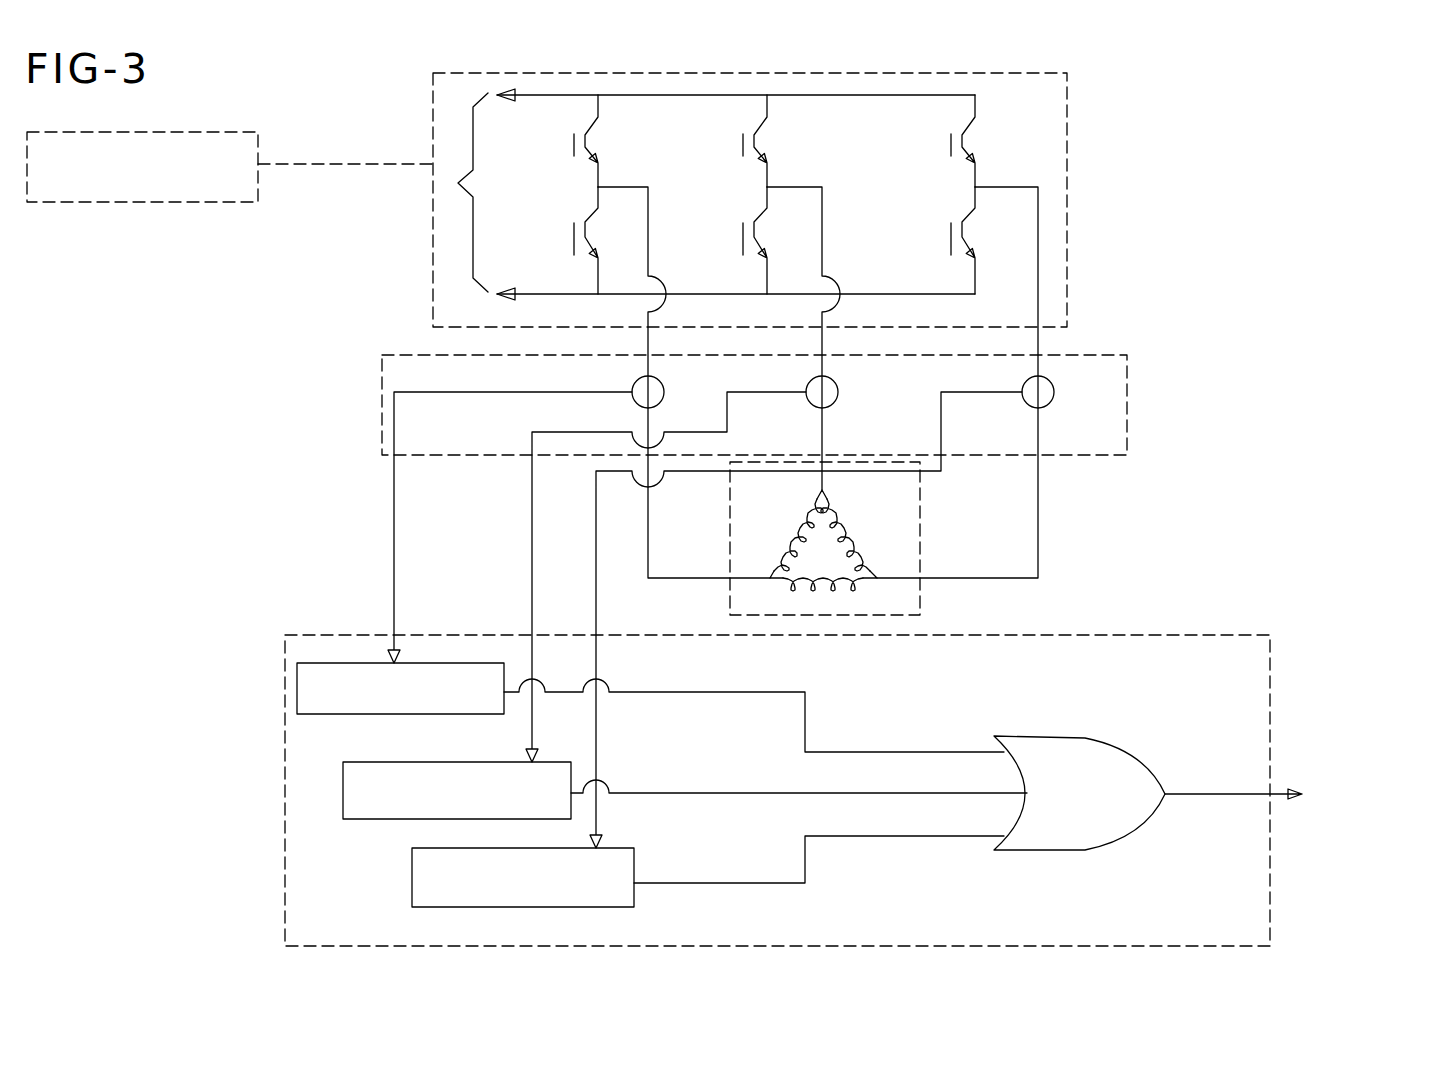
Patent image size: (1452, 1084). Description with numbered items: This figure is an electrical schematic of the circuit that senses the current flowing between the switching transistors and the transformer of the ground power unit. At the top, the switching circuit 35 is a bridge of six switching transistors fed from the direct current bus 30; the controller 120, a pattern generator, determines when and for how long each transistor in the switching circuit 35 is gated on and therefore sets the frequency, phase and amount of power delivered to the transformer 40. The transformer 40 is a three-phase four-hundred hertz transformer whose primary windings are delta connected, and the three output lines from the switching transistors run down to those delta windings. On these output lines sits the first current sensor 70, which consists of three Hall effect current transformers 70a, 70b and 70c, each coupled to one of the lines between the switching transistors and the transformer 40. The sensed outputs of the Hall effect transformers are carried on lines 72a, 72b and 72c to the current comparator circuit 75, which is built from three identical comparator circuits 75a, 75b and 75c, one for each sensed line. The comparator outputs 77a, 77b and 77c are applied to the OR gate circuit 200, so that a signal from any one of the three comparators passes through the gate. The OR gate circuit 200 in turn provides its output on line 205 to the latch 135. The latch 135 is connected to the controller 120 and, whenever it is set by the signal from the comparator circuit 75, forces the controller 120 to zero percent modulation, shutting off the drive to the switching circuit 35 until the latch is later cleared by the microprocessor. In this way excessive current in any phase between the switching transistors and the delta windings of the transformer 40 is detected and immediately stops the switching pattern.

The controller 120 is at (102, 187).
The switching circuit 35 is at (1047, 118).
The direct current bus 30 is at (458, 184).
The first current sensor 70 is at (1112, 378).
The Hall effect current transformer 70a is at (634, 384).
The Hall effect current transformer 70b is at (838, 393).
The Hall effect current transformer 70c is at (1054, 396).
The line 72a is at (396, 514).
The line 72b is at (533, 539).
The line 72c is at (598, 598).
The transformer 40 is at (920, 604).
The current comparator circuit 75 is at (319, 928).
The comparator circuit 75a is at (297, 686).
The comparator circuit 75b is at (342, 794).
The comparator circuit 75c is at (412, 884).
The comparator output line 77a is at (863, 752).
The comparator output line 77b is at (923, 792).
The comparator output line 77c is at (938, 838).
The OR gate circuit 200 is at (1119, 740).
The line 205 is at (1250, 790).
The latch circuit 135 is at (1363, 802).